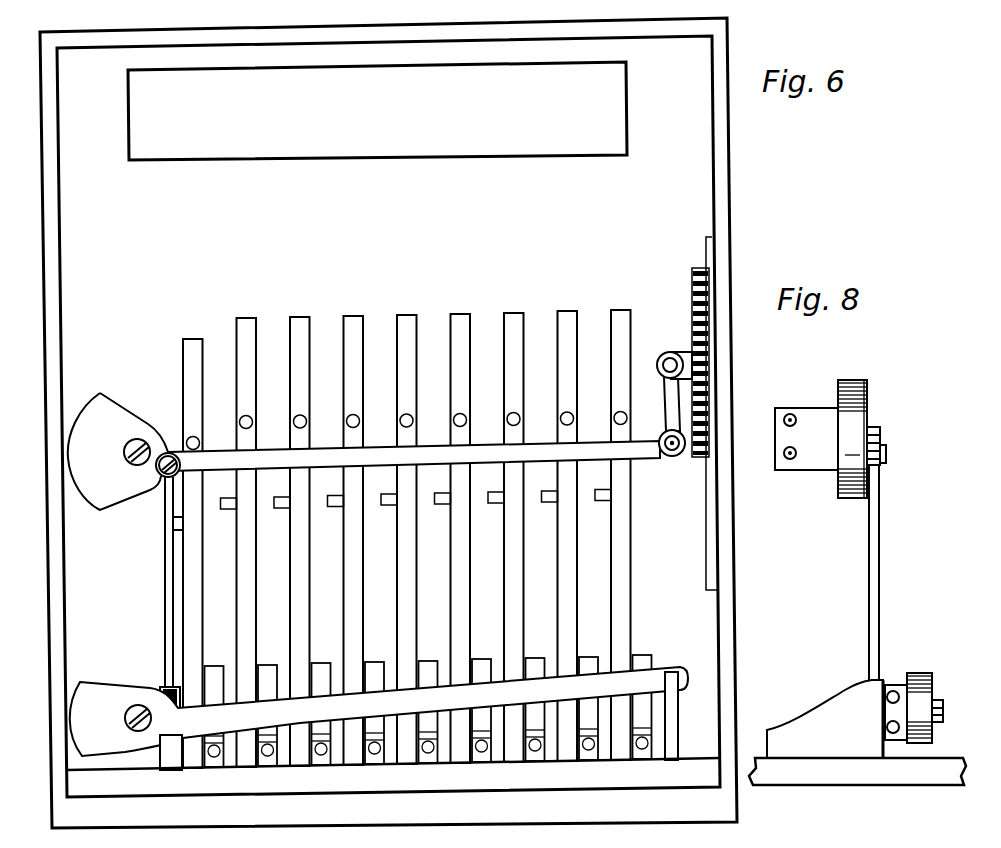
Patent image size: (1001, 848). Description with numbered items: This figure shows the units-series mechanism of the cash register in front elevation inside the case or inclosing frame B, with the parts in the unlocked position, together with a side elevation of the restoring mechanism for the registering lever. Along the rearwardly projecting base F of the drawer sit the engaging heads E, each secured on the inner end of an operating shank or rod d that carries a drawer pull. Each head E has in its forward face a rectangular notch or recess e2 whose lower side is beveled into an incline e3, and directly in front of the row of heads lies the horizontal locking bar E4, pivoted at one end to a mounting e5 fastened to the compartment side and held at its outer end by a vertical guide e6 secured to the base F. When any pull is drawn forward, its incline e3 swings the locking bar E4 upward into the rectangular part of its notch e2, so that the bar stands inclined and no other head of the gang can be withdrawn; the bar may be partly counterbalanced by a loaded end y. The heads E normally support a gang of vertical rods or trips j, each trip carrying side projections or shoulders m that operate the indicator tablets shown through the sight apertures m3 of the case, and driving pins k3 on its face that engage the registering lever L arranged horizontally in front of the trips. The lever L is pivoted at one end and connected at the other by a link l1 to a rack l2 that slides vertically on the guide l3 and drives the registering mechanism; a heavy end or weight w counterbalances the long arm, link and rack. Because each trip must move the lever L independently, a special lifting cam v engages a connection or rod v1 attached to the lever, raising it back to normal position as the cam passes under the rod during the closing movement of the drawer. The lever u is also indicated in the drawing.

In FIG. 6, the case or inclosing frame B is at (388, 423).
In FIG. 6, the sight apertures m3 is at (377, 111).
In FIG. 6, the fan-shaped lever u is at (124, 451).
In FIG. 6, the registering lever L is at (414, 459).
In FIG. 6, the driving pins or projections k3 is at (198, 441).
In FIG. 6, the vertical rods or trips j is at (407, 539).
In FIG. 6, the driving projections or shoulders m is at (222, 498).
In FIG. 6, the link l1 is at (668, 417).
In FIG. 6, the rack l2 is at (692, 332).
In FIG. 6, the guide l3 is at (706, 522).
In FIG. 6, the connection or rod v1 is at (163, 611).
In FIG. 8, the connection or rod v1 is at (889, 572).
In FIG. 6, the lifting cam v is at (171, 752).
In FIG. 8, the lifting cam v is at (825, 719).
In FIG. 6, the loaded end y is at (122, 721).
In FIG. 8, the loaded end y is at (914, 708).
In FIG. 6, the mounting e5 is at (68, 698).
In FIG. 6, the engaging head E is at (428, 684).
In FIG. 6, the locking bar E4 is at (379, 711).
In FIG. 6, the vertical guide e6 is at (679, 708).
In FIG. 6, the notch or recess e2 is at (329, 725).
In FIG. 6, the incline e3 is at (436, 737).
In FIG. 6, the operating shanks or rods d is at (274, 750).
In FIG. 6, the rearwardly projecting base F is at (393, 778).
In FIG. 8, the rearwardly projecting base F is at (857, 772).
In FIG. 8, the heavy end or weight w is at (830, 439).